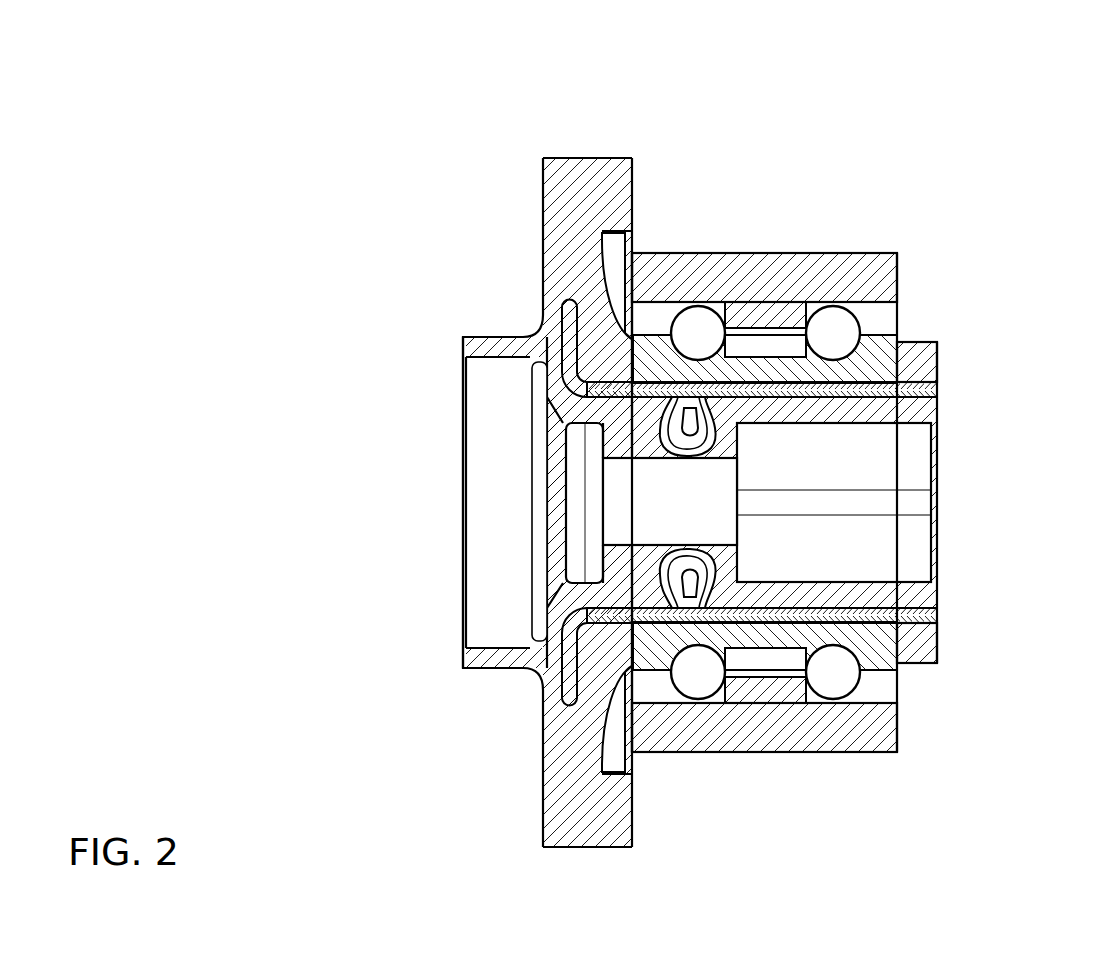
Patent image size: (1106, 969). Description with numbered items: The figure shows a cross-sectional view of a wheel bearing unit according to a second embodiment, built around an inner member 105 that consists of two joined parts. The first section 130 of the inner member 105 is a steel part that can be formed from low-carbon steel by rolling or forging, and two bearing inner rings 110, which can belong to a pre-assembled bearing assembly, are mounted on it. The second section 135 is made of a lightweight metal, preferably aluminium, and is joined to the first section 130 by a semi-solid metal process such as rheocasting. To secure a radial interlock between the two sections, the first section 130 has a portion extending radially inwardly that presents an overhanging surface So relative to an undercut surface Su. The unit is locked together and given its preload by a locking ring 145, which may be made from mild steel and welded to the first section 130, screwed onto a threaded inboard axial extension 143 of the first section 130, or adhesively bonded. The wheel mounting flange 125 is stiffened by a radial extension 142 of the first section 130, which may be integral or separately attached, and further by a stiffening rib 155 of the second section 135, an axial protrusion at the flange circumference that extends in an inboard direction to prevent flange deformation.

The inner member 105 is at (400, 293).
The bearing inner rings 110 is at (868, 357).
The wheel mounting flange 125 is at (557, 237).
The first section 130 is at (780, 398).
The second section 135 is at (640, 440).
The radial extension 142 is at (550, 686).
The inboard axial extension 143 is at (920, 388).
The locking ring 145 is at (925, 646).
The stiffening rib 155 is at (618, 818).
The overhanging surface So is at (655, 578).
The undercut surface Su is at (642, 603).